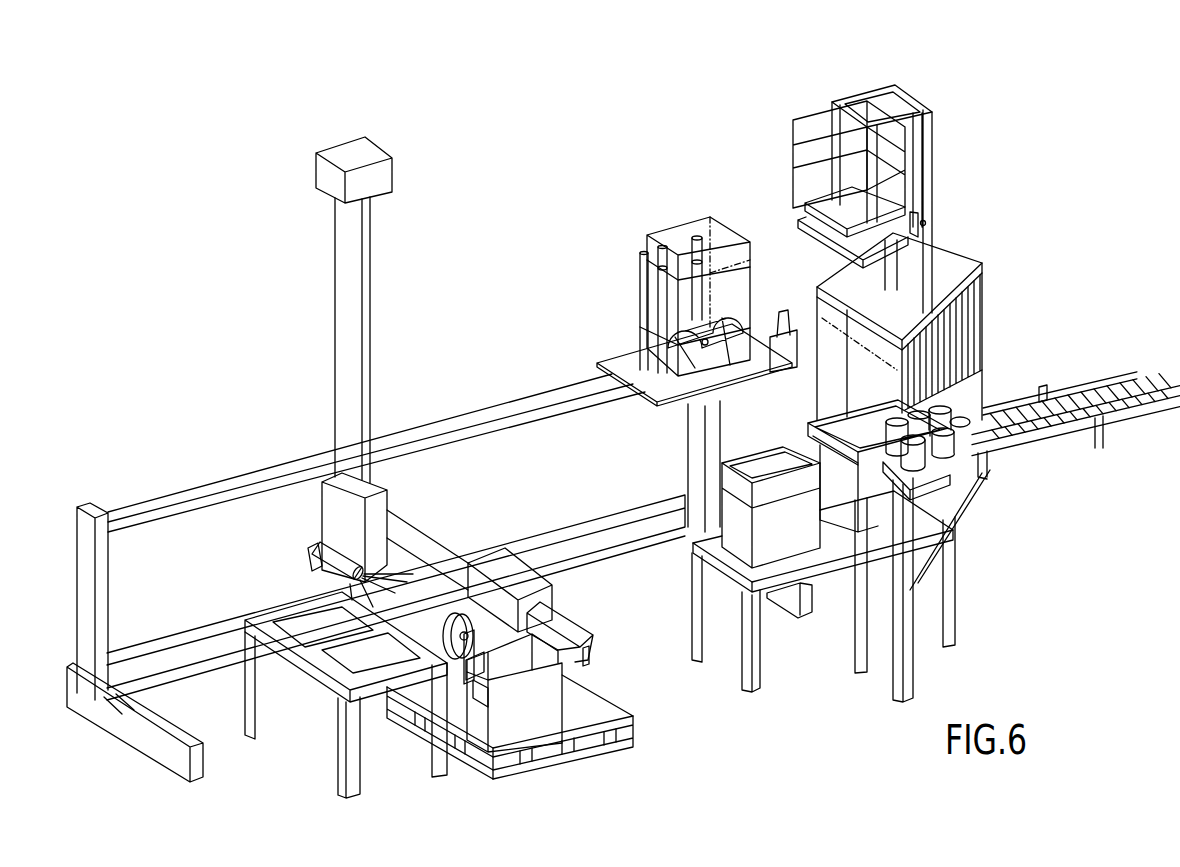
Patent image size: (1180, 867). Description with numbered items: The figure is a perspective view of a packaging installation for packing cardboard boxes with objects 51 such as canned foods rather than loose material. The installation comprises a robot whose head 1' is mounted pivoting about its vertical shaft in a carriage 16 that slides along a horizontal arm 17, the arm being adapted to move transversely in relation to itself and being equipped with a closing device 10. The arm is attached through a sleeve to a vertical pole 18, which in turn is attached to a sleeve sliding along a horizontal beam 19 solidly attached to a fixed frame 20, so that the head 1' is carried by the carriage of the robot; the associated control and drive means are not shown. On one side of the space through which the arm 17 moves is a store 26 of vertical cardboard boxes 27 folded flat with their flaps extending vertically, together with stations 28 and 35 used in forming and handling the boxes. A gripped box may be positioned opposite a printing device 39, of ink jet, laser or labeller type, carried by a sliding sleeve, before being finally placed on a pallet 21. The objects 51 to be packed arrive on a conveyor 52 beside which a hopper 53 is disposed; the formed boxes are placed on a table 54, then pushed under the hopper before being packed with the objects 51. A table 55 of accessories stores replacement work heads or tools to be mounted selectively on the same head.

The head 1' is at (595, 628).
The closing device 10 is at (457, 657).
The carriage 16 is at (519, 566).
The horizontal arm 17 is at (449, 503).
The vertical pole 18 is at (371, 388).
The horizontal beam 19 is at (212, 662).
The fixed frame 20 is at (246, 472).
The pallet 21 is at (578, 755).
The store 26 is at (986, 304).
The cardboard boxes 27 is at (738, 538).
The station 28 is at (935, 187).
The station 35 is at (638, 308).
The printing device 39 is at (314, 550).
The objects 51 is at (968, 485).
The conveyor 52 is at (1058, 455).
The hopper 53 is at (848, 434).
The table 54 is at (882, 552).
The table of accessories 55 is at (370, 688).